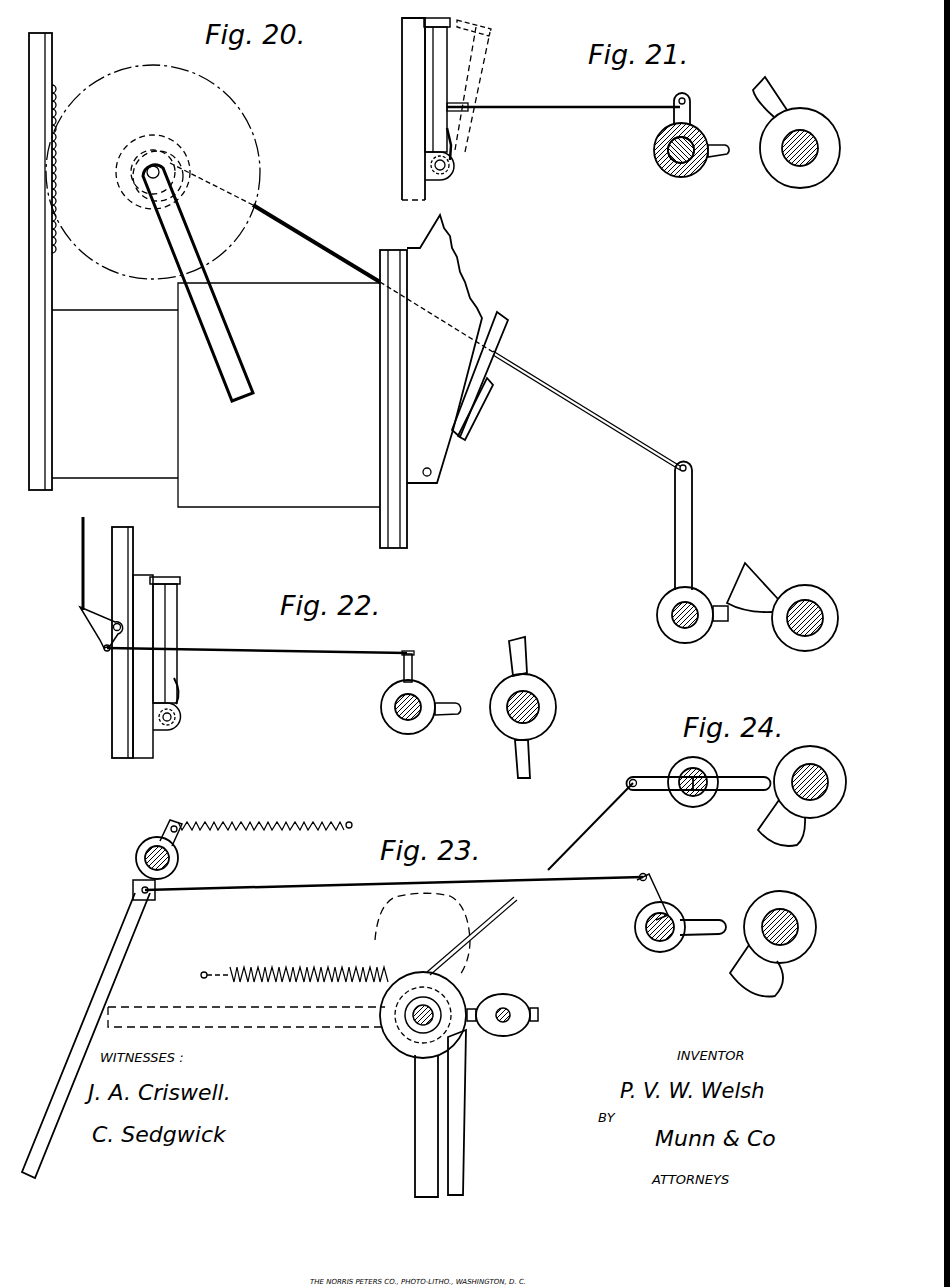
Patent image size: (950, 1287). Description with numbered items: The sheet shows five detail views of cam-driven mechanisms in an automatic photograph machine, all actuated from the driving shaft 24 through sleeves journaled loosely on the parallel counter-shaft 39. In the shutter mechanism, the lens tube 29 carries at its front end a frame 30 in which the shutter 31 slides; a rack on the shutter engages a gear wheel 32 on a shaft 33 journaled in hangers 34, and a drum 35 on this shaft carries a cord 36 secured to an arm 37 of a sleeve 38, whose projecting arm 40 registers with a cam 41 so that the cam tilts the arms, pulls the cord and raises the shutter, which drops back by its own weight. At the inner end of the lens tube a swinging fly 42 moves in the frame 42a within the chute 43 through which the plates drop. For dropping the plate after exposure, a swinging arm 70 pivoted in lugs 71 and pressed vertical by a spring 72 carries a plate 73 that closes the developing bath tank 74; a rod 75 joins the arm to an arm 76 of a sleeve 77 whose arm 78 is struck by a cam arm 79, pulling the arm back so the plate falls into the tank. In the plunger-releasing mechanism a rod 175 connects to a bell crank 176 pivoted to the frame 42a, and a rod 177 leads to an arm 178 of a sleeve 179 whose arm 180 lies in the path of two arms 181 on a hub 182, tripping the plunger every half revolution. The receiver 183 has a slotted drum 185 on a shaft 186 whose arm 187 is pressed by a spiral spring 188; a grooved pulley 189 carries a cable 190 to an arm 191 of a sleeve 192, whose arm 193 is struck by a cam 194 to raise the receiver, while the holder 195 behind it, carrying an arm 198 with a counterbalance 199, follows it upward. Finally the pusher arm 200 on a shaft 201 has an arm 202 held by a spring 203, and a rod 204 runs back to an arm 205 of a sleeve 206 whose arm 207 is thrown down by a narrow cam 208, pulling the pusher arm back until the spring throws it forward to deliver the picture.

In FIG. 20, the driving shaft 24 is at (808, 602).
In FIG. 21, the driving shaft 24 is at (803, 160).
In FIG. 22, the driving shaft 24 is at (516, 724).
In FIG. 24, the driving shaft 24 is at (812, 800).
In FIG. 20, the lens tube 29 is at (216, 395).
In FIG. 20, the frame 30 is at (42, 304).
In FIG. 20, the shutter 31 is at (55, 105).
In FIG. 20, the gear wheel 32 is at (153, 172).
In FIG. 20, the shaft 33 is at (148, 185).
In FIG. 20, the hangers 34 is at (205, 280).
In FIG. 20, the drum 35 is at (168, 166).
In FIG. 20, the cord or cable 36 is at (316, 243).
In FIG. 20, the arm 37 is at (692, 512).
In FIG. 20, the sleeve 38 is at (697, 598).
In FIG. 20, the counter-shaft 39 is at (678, 627).
In FIG. 21, the counter-shaft 39 is at (687, 166).
In FIG. 22, the counter-shaft 39 is at (414, 728).
In FIG. 24, the counter-shaft 39 is at (700, 796).
In FIG. 20, the projecting arm 40 is at (721, 622).
In FIG. 20, the cam 41 is at (766, 586).
In FIG. 20, the swinging fly 42 is at (472, 372).
In FIG. 20, the frame 42a is at (398, 373).
In FIG. 22, the frame 42a is at (142, 634).
In FIG. 20, the chute 43 is at (444, 349).
In FIG. 21, the swinging arm 70 is at (447, 89).
In FIG. 22, the swinging arm 70 is at (177, 626).
In FIG. 21, the lugs 71 is at (450, 170).
In FIG. 22, the lugs 71 is at (172, 726).
In FIG. 21, the spring 72 is at (453, 148).
In FIG. 22, the spring 72 is at (180, 700).
In FIG. 21, the plate 73 is at (432, 20).
In FIG. 22, the plate 73 is at (178, 580).
In FIG. 21, the developing bath tank 74 is at (402, 122).
In FIG. 22, the developing bath tank 74 is at (142, 592).
In FIG. 21, the rod 75 is at (584, 108).
In FIG. 21, the arm 76 is at (690, 110).
In FIG. 21, the sleeve 77 is at (668, 173).
In FIG. 21, the projecting arm 78 is at (722, 165).
In FIG. 21, the cam arm 79 is at (772, 97).
In FIG. 22, the rod 175 is at (80, 578).
In FIG. 22, the bell crank 176 is at (100, 634).
In FIG. 22, the rod 177 is at (276, 656).
In FIG. 22, the arm 178 is at (413, 664).
In FIG. 22, the sleeve 179 is at (428, 700).
In FIG. 22, the arm 180 is at (450, 716).
In FIG. 22, the arms 181 is at (531, 750).
In FIG. 22, the hub 182 is at (541, 707).
In FIG. 23, the receiver 183 is at (415, 1134).
In FIG. 23, the slotted drum 185 is at (440, 1010).
In FIG. 23, the shaft 186 is at (395, 1036).
In FIG. 23, the arm 187 is at (390, 988).
In FIG. 23, the spiral spring 188 is at (262, 968).
In FIG. 23, the grooved pulley 189 is at (410, 1042).
In FIG. 23, the cable 190 is at (488, 916).
In FIG. 24, the arm 191 is at (658, 791).
In FIG. 24, the sleeve 192 is at (690, 808).
In FIG. 24, the arm 193 is at (755, 791).
In FIG. 24, the cam 194 is at (776, 836).
In FIG. 23, the holder 195 is at (464, 1113).
In FIG. 23, the rearwardly extending arm 198 is at (538, 1011).
In FIG. 23, the counterbalance 199 is at (505, 1036).
In FIG. 23, the pusher arm 200 is at (110, 962).
In FIG. 23, the shaft 201 is at (147, 851).
In FIG. 23, the arm 202 is at (171, 822).
In FIG. 23, the spring 203 is at (245, 823).
In FIG. 23, the rod 204 is at (300, 882).
In FIG. 24, the arm 205 is at (652, 893).
In FIG. 24, the sleeve 206 is at (675, 915).
In FIG. 24, the arm 207 is at (705, 936).
In FIG. 24, the cam 208 is at (768, 896).